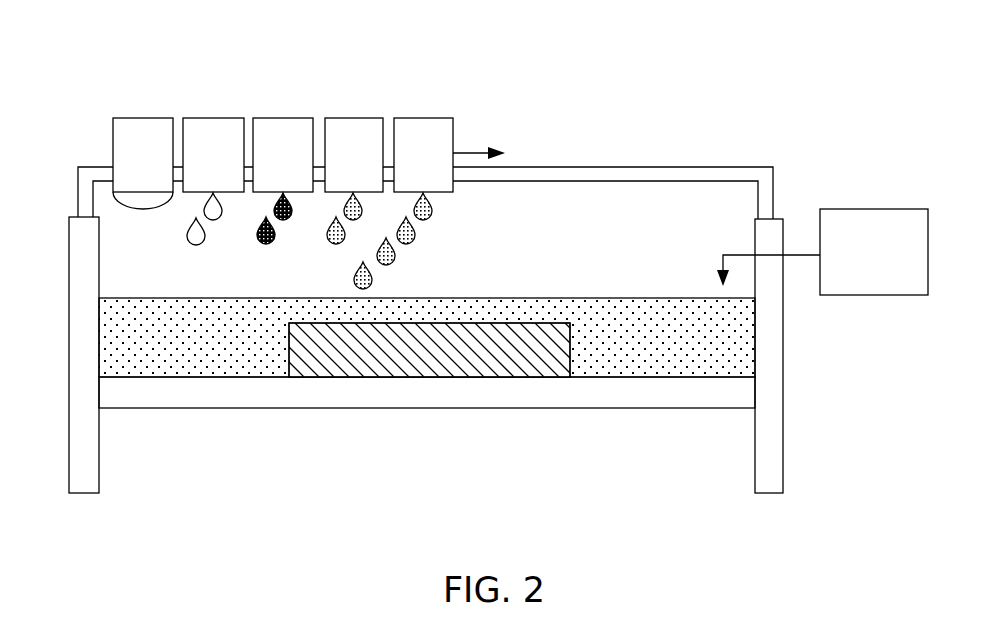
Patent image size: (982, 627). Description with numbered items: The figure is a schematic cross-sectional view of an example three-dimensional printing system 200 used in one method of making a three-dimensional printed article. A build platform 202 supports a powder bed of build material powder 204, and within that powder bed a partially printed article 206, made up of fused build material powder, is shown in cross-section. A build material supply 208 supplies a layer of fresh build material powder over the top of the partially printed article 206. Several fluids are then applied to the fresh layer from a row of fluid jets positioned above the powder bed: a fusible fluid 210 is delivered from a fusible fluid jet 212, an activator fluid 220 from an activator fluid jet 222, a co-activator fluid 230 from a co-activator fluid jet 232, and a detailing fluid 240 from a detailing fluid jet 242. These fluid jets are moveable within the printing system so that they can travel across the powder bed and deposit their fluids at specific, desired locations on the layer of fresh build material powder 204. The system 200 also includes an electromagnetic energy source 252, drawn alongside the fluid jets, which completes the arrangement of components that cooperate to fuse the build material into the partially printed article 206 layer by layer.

The 3D printing system 200 is at (152, 46).
The build platform 202 is at (592, 390).
The build material powder 204 is at (272, 362).
The partially printed article 206 is at (357, 367).
The build material supply 208 is at (854, 264).
The fusible fluid 210 is at (413, 236).
The fusible fluid jet 212 is at (444, 165).
The activator fluid 220 is at (328, 235).
The activator fluid jet 222 is at (334, 165).
The co-activator fluid 230 is at (260, 238).
The co-activator fluid jet 232 is at (263, 165).
The detailing fluid 240 is at (195, 237).
The detailing fluid jet 242 is at (234, 165).
The electromagnetic energy source 252 is at (123, 165).